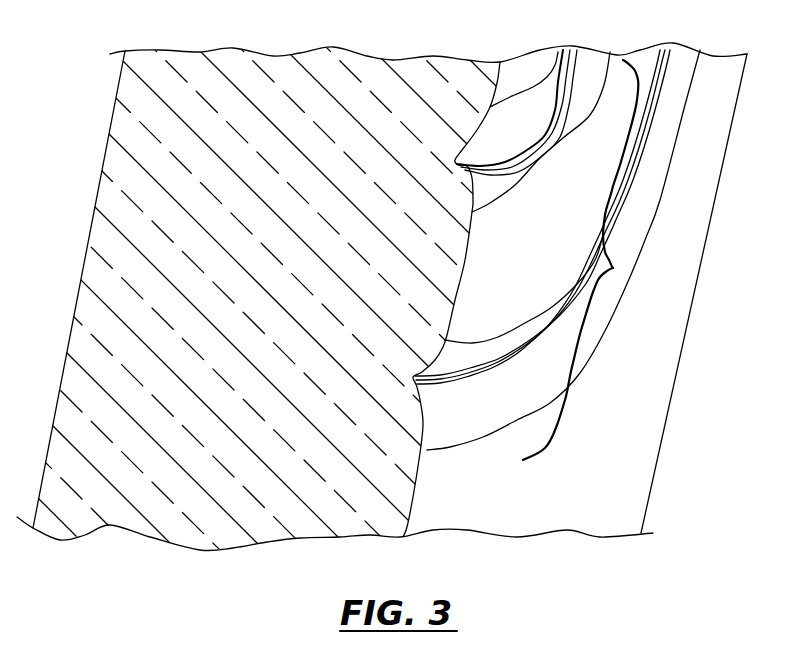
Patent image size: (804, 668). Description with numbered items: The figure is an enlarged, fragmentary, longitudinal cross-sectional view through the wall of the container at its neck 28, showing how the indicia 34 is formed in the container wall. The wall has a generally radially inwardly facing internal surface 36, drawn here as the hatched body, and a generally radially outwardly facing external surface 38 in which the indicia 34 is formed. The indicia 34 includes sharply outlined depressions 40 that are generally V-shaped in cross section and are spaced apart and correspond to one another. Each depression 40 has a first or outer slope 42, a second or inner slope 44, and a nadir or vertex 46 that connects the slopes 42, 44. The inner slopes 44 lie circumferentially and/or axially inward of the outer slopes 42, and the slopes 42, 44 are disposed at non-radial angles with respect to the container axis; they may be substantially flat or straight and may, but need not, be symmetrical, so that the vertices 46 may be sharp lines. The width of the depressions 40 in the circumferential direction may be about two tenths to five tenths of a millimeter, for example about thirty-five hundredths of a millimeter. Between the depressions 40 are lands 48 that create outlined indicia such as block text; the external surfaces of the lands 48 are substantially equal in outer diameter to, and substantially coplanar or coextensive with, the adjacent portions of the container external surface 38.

The neck 28 is at (722, 262).
The indicia 34 is at (542, 255).
The internal surface 36 is at (102, 182).
The external surface 38 is at (507, 65).
The depressions 40 is at (580, 101).
The outer slopes 42 is at (500, 135).
The inner slopes 44 is at (493, 180).
The vertices 46 is at (500, 160).
The lands 48 is at (580, 230).